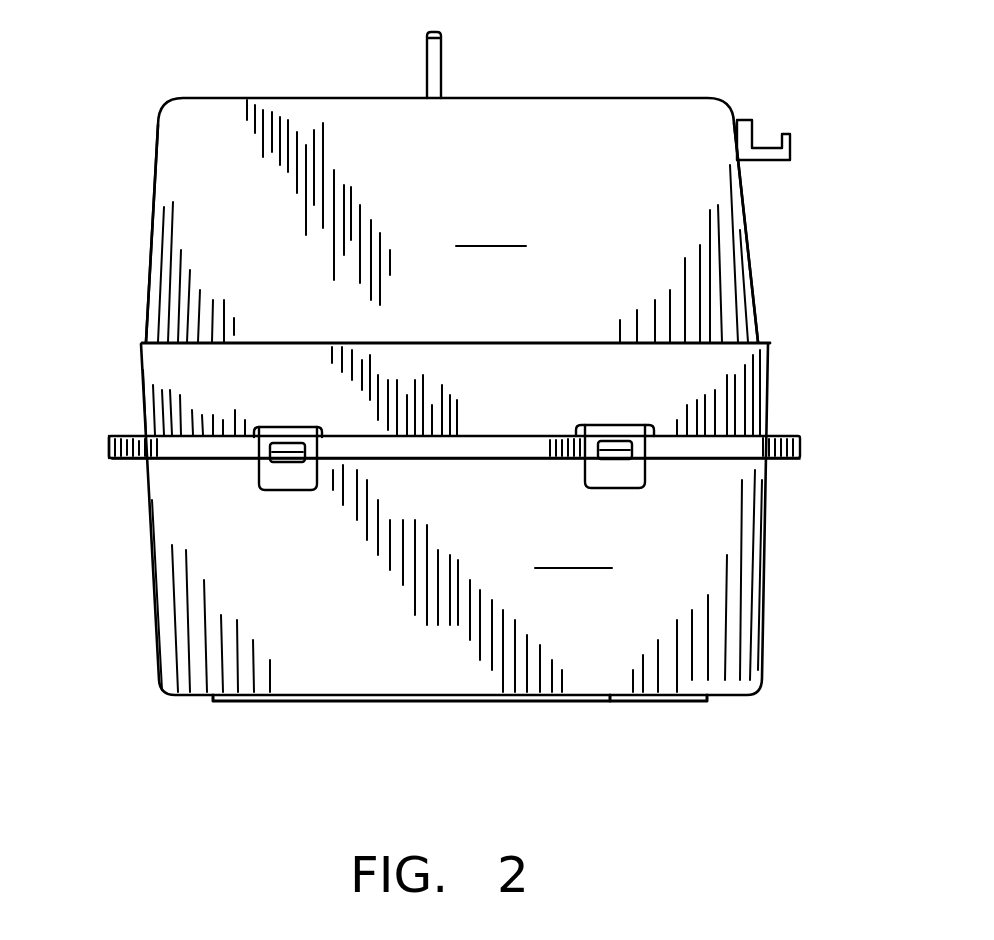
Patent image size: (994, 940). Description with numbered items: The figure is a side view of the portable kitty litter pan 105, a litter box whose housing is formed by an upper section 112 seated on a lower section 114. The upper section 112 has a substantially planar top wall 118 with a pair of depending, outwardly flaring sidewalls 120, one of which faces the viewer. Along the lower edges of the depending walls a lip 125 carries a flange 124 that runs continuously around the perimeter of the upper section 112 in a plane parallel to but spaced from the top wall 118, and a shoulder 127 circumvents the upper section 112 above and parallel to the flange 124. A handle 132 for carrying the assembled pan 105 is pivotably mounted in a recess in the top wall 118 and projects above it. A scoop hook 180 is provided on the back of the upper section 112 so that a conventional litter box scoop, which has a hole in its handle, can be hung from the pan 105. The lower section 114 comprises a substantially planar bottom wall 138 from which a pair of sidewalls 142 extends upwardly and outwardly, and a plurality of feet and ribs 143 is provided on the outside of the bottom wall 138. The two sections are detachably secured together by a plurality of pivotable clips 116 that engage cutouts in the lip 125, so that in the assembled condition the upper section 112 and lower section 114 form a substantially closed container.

The portable kitty litter pan 105 is at (80, 452).
The upper section 112 is at (150, 182).
The lower section 114 is at (771, 572).
The pivotable clips 116 is at (290, 438).
The top wall 118 is at (603, 98).
The sidewalls 120 is at (491, 229).
The flange 124 is at (792, 437).
The lip 125 is at (803, 450).
The shoulder 127 is at (770, 342).
The handle 132 is at (441, 69).
The bottom wall 138 is at (612, 700).
The sidewalls 142 is at (573, 552).
The feet and ribs 143 is at (400, 703).
The scoop hook 180 is at (764, 138).